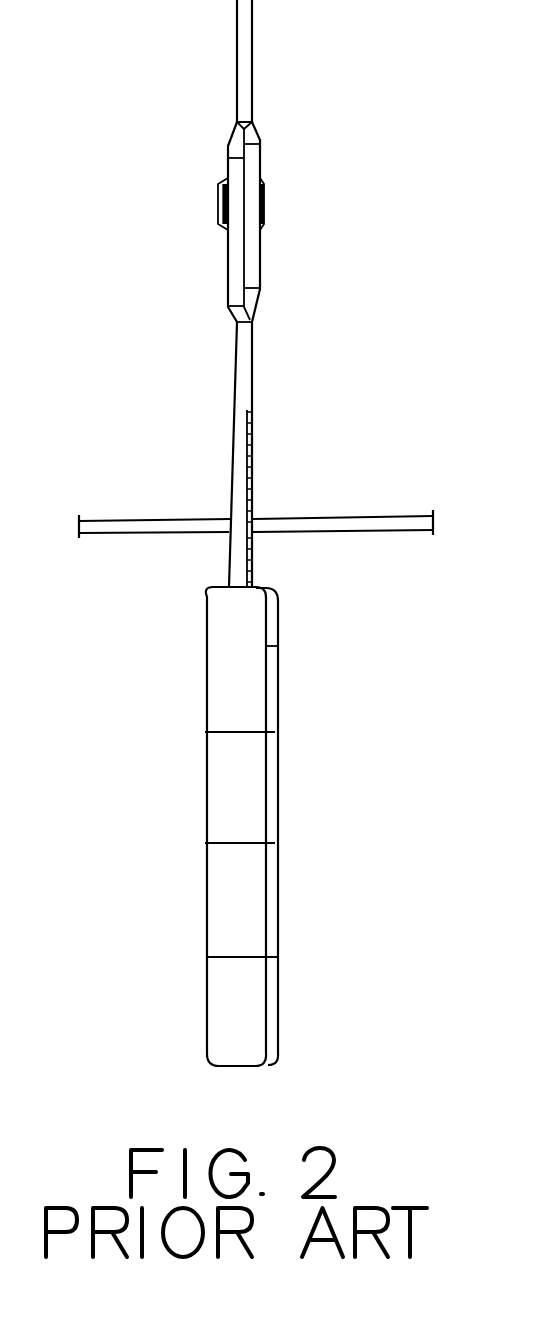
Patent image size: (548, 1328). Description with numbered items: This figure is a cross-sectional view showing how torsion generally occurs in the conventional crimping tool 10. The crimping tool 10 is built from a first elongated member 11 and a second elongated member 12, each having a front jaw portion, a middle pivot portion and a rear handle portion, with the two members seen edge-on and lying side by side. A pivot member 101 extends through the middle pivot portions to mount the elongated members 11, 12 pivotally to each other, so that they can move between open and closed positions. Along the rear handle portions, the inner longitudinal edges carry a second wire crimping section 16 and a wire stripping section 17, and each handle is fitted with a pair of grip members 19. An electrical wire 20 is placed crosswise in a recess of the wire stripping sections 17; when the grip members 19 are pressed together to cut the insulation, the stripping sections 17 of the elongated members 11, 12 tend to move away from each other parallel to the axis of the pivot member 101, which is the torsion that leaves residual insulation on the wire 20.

The crimping tool 10 is at (228, 368).
The first elongated member 11 is at (228, 268).
The second elongated member 12 is at (261, 253).
The pivot member 101 is at (218, 205).
The second wire crimping section 16 is at (248, 446).
The wire stripping section 17 is at (249, 553).
The grip members 19 is at (252, 755).
The electrical wire 20 is at (390, 536).